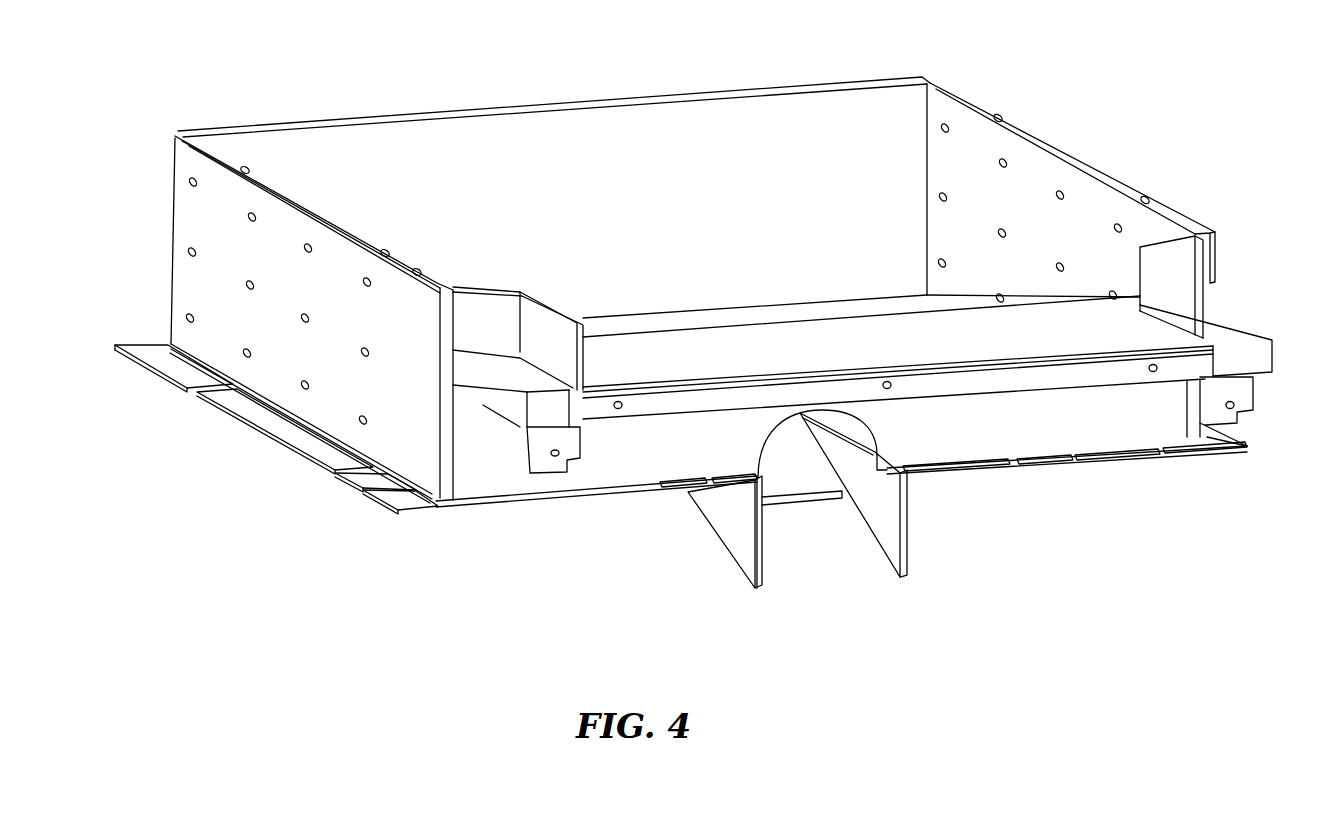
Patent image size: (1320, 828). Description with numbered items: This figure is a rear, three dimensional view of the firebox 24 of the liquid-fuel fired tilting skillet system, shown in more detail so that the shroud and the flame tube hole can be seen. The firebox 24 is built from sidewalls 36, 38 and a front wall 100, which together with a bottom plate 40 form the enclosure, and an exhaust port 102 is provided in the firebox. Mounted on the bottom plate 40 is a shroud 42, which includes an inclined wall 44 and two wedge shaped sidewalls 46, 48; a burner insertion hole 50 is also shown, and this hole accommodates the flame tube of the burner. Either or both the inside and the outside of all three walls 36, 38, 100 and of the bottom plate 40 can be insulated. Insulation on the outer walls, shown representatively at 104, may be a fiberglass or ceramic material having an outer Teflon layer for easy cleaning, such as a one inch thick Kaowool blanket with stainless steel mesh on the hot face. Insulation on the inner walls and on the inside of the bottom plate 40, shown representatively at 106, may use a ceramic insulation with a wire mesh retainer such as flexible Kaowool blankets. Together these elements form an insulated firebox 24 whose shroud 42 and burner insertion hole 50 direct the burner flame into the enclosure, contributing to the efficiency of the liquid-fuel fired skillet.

The front wall 100 is at (407, 110).
The insulation on the outer walls 104 is at (195, 210).
The insulation on the inner walls 106 is at (862, 157).
The firebox 24 is at (1172, 86).
The sidewall 38 is at (1141, 175).
The exhaust port 102 is at (1128, 341).
The sidewall 36 is at (346, 391).
The bottom plate 40 is at (414, 527).
The inclined wall 44 is at (806, 488).
The wedge shaped sidewall 46 is at (745, 537).
The wedge shaped sidewall 48 is at (905, 533).
The burner insertion hole 50 is at (833, 560).
The shroud 42 is at (964, 591).